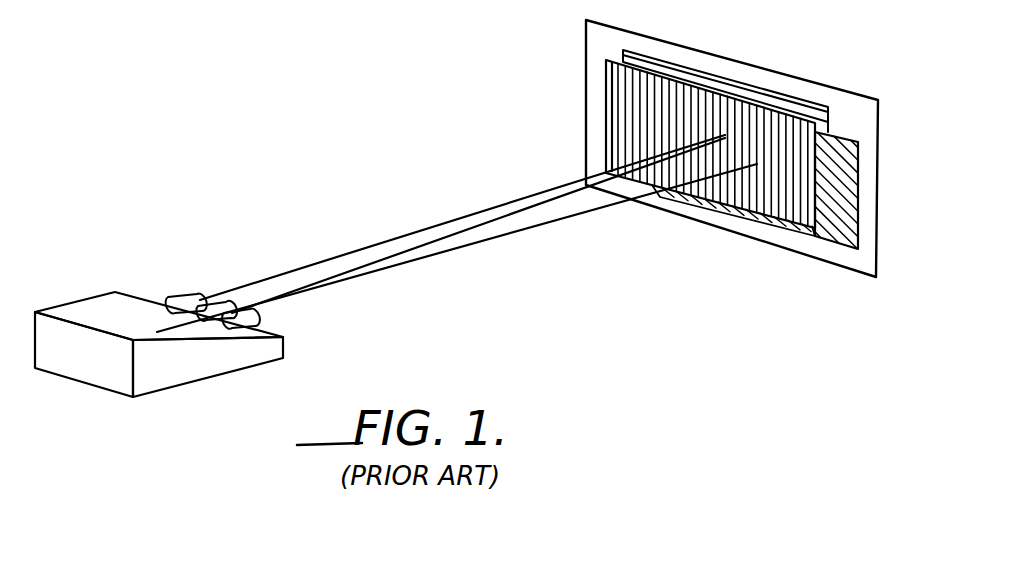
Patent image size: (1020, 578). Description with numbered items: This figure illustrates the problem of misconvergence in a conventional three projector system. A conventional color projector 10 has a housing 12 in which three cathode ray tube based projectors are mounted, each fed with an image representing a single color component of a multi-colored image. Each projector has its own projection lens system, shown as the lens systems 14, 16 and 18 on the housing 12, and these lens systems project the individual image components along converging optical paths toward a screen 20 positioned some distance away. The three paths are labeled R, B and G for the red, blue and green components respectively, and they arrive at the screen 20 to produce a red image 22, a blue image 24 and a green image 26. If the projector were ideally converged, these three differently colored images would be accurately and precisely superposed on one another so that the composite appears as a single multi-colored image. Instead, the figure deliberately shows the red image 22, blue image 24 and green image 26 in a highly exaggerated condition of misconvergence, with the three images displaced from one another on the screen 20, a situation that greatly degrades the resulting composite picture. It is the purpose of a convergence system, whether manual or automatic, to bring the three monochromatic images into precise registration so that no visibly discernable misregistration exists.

The color projector 10 is at (121, 258).
The housing 12 is at (73, 302).
The projection lens system 14 is at (183, 300).
The projection lens system 16 is at (217, 300).
The projection lens system 18 is at (254, 321).
The screen 20 is at (823, 86).
The red image 22 is at (612, 105).
The blue image 24 is at (727, 87).
The green image 26 is at (838, 240).
The red optical path R is at (430, 228).
The blue optical path B is at (485, 231).
The green optical path G is at (537, 226).